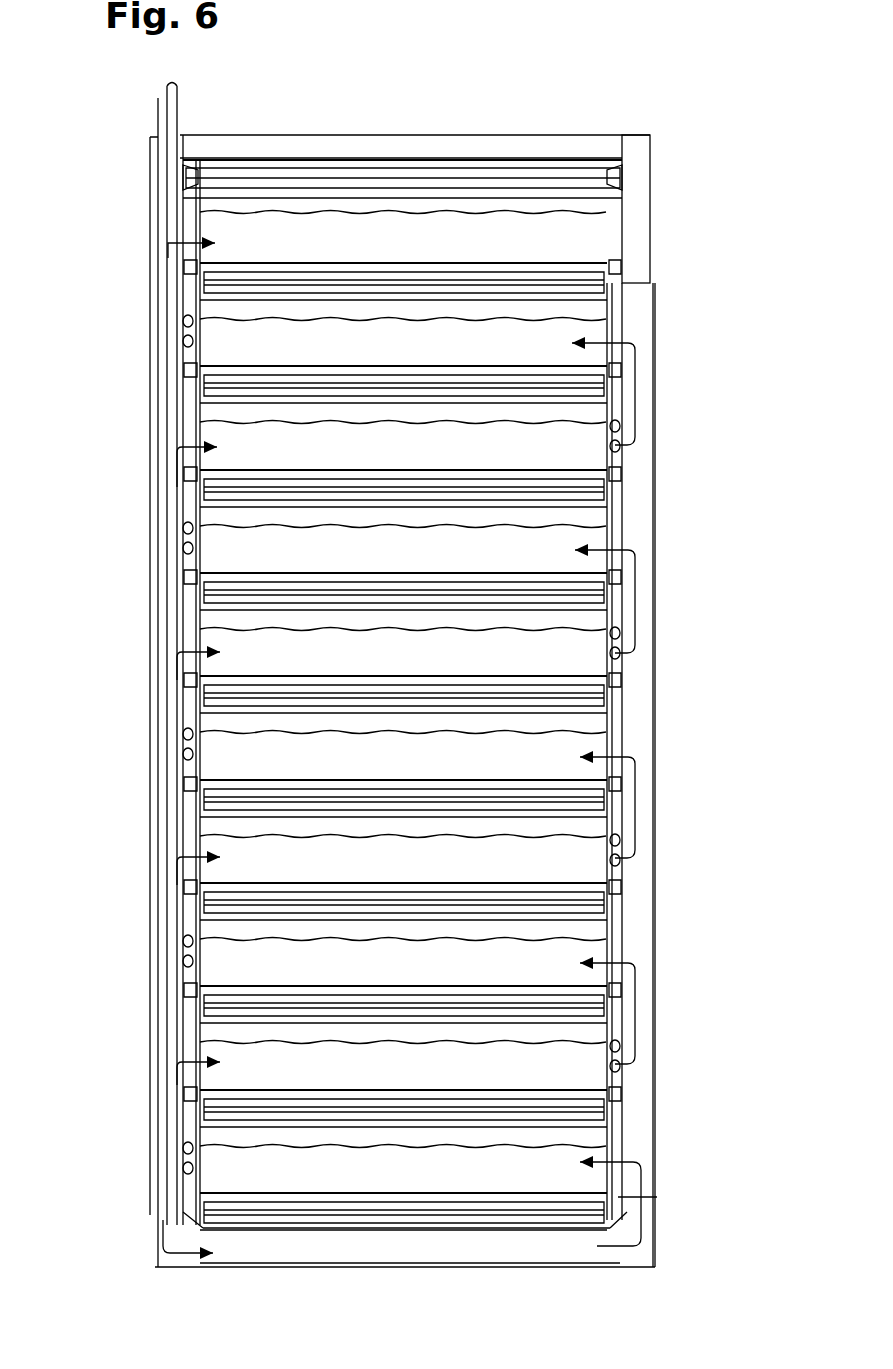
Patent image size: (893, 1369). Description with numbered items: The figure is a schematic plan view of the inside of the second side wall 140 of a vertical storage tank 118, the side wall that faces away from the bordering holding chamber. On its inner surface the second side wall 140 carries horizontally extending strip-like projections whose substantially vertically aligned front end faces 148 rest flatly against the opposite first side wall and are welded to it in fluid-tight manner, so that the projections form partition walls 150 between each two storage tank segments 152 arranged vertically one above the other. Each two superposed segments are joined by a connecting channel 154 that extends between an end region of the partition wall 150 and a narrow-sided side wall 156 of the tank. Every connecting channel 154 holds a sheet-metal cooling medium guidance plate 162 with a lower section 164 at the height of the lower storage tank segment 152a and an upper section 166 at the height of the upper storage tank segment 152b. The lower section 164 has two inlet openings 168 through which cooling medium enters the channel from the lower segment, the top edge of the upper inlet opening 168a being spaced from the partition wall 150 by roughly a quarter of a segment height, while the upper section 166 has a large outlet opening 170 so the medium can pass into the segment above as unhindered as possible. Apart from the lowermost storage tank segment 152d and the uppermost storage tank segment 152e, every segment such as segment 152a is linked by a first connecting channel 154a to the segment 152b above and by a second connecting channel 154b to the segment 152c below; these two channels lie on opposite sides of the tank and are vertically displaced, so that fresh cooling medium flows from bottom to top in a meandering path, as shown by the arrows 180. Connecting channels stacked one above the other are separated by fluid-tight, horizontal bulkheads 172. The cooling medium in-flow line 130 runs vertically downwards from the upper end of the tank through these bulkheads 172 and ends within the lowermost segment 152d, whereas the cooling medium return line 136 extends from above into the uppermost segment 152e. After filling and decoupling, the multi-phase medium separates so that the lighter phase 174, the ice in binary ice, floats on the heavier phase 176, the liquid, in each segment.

The vertical storage tank 118 is at (745, 147).
The cooling medium in-flow line 130 is at (157, 220).
The cooling medium return line 136 is at (173, 95).
The second side wall 140 is at (415, 150).
The front end faces 148 is at (590, 998).
The partition wall 150 is at (547, 167).
The storage tank segments 152 is at (429, 360).
The storage tank segment 152a is at (515, 462).
The storage tank segment 152b is at (570, 360).
The storage tank segment 152c is at (505, 566).
The lowermost storage tank segment 152d is at (445, 1264).
The uppermost storage tank segment 152e is at (445, 252).
The connecting channel 154 is at (642, 380).
The first connecting channel 154a is at (642, 395).
The second connecting channel 154b is at (175, 487).
The narrow-sided side wall 156 is at (655, 450).
The cooling medium guidance plate 162 is at (613, 472).
The lower section 164 is at (613, 408).
The upper section 166 is at (605, 315).
The inlet openings 168 is at (614, 426).
The upper inlet opening 168a is at (614, 633).
The outlet opening 170 is at (620, 547).
The bulkhead 172 is at (637, 697).
The lighter phase 174 is at (607, 202).
The heavier phase 176 is at (584, 252).
The arrows 180 is at (168, 258).